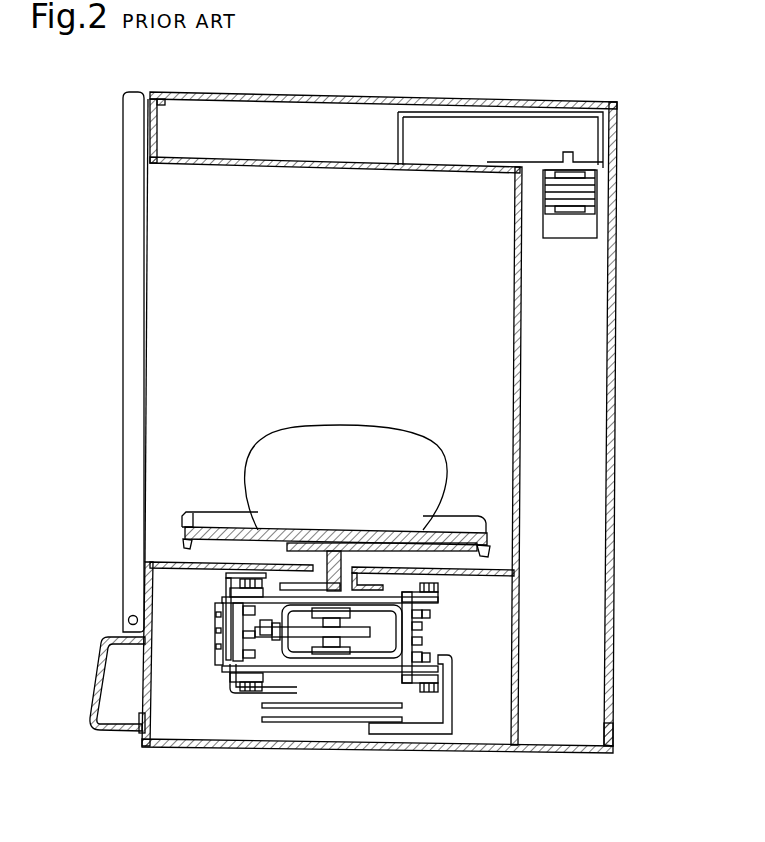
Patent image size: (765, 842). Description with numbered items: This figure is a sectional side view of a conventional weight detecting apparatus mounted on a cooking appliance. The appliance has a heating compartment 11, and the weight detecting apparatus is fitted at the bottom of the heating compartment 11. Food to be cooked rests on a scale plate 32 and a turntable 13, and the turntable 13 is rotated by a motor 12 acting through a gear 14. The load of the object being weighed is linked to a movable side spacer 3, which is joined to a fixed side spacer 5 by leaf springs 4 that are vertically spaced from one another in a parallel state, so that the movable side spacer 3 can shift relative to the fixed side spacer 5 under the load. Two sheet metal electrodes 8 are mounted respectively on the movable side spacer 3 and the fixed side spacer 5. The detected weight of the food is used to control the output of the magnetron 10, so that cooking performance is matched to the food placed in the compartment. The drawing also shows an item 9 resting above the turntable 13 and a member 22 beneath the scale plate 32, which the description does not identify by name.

The movable side spacer 3 is at (430, 606).
The leaf springs 4 is at (272, 590).
The fixed side spacer 5 is at (237, 610).
The sheet metal electrodes 8 is at (262, 718).
The food 9 is at (435, 494).
The magnetron 10 is at (583, 208).
The heating compartment 11 is at (522, 402).
The motor 12 is at (275, 660).
The turntable 13 is at (187, 542).
The gear 14 is at (343, 638).
The turntable shaft 22 is at (345, 556).
The scale plate 32 is at (183, 517).